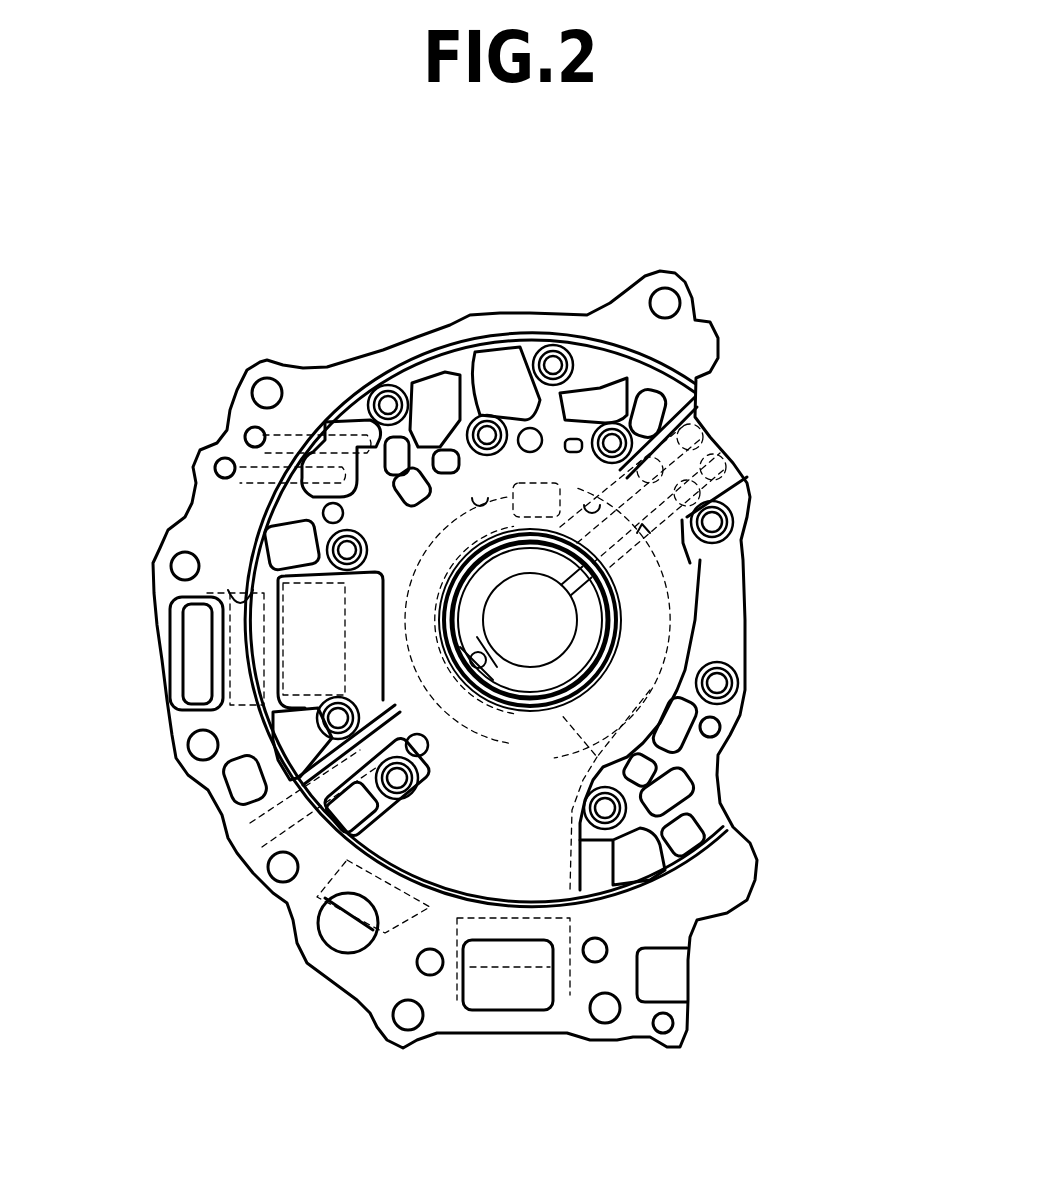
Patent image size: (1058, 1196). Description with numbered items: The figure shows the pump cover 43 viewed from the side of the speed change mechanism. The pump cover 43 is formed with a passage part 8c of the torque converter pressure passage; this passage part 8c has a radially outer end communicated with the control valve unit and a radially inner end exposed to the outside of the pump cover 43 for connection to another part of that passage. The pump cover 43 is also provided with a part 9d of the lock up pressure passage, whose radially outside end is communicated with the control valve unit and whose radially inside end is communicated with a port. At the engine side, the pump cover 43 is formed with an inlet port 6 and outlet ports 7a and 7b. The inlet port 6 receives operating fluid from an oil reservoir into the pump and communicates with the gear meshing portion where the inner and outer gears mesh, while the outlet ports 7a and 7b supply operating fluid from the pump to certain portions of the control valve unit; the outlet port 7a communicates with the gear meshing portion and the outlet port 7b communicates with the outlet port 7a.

The pump cover 43 is at (806, 352).
The inlet port 6 is at (545, 833).
The outlet port 7a is at (478, 498).
The outlet port 7b is at (228, 590).
The passage part of the torque converter pressure passage 8c is at (590, 505).
The part of the lock up pressure passage 9d is at (637, 533).